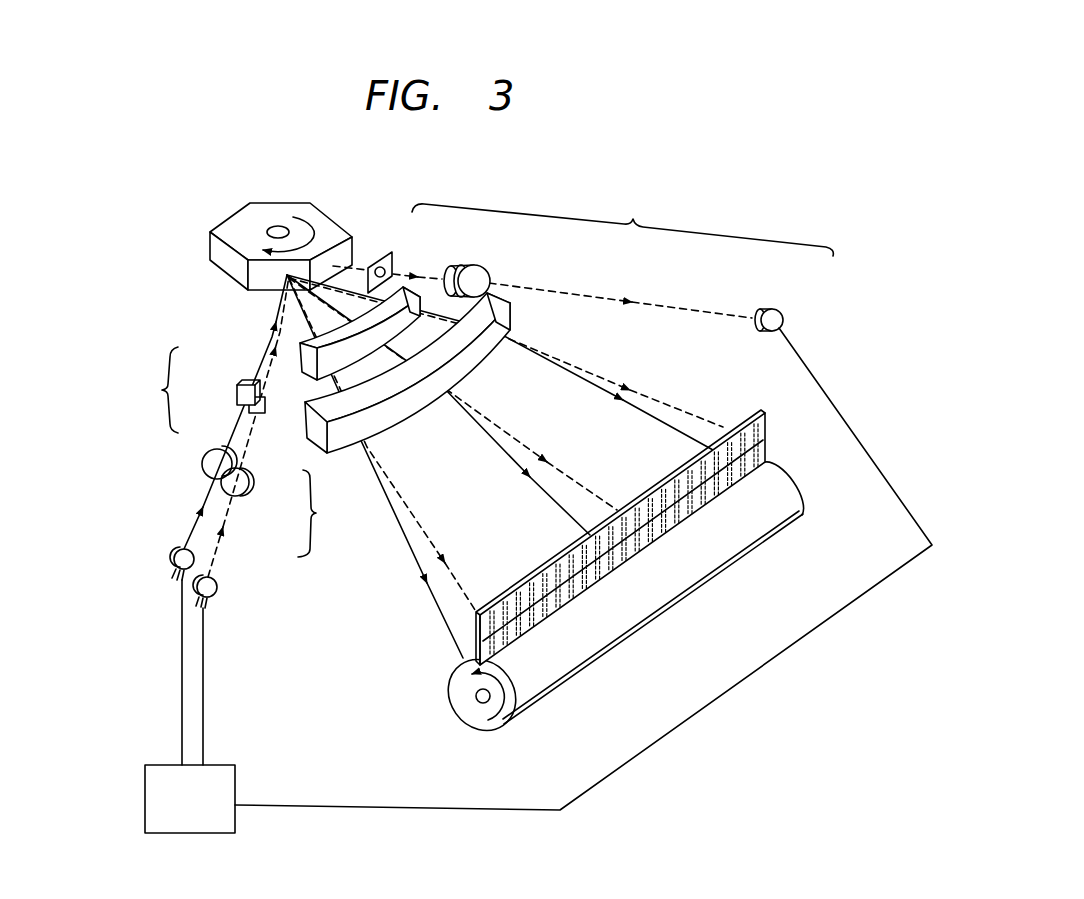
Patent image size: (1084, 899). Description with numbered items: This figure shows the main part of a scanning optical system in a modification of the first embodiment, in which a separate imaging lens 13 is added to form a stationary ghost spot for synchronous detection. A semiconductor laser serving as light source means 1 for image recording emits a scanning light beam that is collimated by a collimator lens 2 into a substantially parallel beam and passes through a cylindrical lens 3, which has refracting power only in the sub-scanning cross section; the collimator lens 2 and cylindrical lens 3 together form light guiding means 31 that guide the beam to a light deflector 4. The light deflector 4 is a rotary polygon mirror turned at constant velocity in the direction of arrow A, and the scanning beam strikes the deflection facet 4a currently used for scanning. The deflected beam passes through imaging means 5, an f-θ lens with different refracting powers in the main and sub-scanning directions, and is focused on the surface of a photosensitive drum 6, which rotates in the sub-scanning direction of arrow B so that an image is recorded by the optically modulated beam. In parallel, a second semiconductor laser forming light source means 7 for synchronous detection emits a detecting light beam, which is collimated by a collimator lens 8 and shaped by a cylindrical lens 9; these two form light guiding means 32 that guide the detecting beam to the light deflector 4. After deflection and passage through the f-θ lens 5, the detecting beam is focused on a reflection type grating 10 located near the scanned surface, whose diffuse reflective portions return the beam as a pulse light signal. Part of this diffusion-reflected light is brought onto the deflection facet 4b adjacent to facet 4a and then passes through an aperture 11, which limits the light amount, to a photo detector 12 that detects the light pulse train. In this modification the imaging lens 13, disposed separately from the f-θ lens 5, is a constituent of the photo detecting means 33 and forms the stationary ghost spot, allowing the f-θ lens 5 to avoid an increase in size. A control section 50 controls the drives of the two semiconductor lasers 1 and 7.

The light source means for image recording 1 is at (175, 558).
The collimator lens 2 is at (206, 447).
The cylindrical lens 3 is at (237, 392).
The light deflector 4 is at (288, 224).
The deflection facet 4a is at (313, 260).
The deflection facet 4b is at (353, 247).
The imaging means 5 is at (290, 390).
The photosensitive drum 6 is at (633, 603).
The light source means for synchronous detection 7 is at (214, 585).
The collimator lens 8 is at (245, 488).
The cylindrical lens 9 is at (262, 412).
The reflection type grating 10 is at (760, 412).
The aperture 11 is at (390, 256).
The photo detector 12 is at (774, 308).
The imaging lens 13 is at (442, 262).
The light guiding means for image recording 31 is at (154, 390).
The light guiding means for synchronous detection 32 is at (321, 513).
The photo detecting means 33 is at (583, 254).
The control section 50 is at (228, 766).
The direction of rotation of the light deflector A is at (293, 216).
The direction of rotation of the photosensitive drum B is at (512, 708).